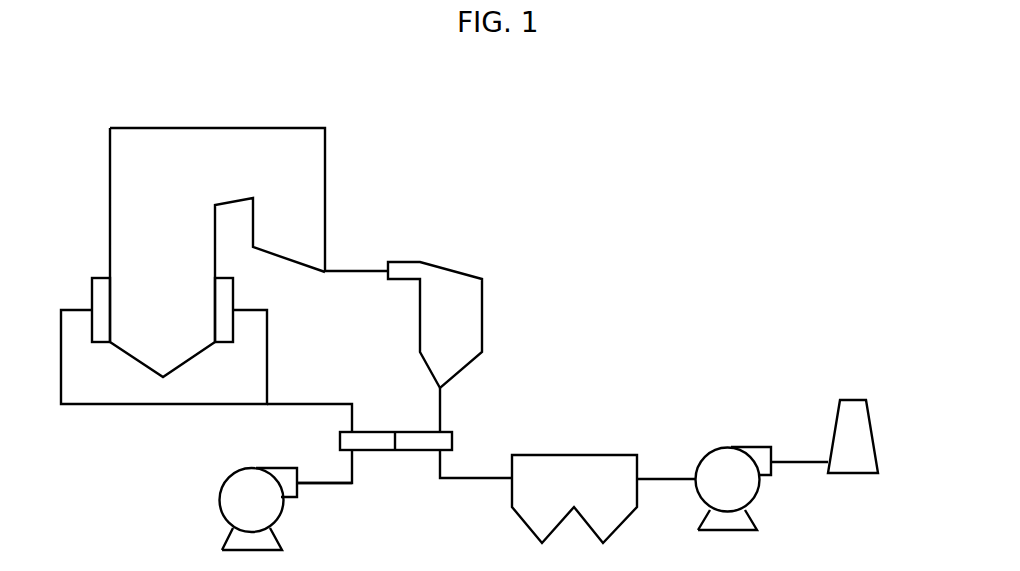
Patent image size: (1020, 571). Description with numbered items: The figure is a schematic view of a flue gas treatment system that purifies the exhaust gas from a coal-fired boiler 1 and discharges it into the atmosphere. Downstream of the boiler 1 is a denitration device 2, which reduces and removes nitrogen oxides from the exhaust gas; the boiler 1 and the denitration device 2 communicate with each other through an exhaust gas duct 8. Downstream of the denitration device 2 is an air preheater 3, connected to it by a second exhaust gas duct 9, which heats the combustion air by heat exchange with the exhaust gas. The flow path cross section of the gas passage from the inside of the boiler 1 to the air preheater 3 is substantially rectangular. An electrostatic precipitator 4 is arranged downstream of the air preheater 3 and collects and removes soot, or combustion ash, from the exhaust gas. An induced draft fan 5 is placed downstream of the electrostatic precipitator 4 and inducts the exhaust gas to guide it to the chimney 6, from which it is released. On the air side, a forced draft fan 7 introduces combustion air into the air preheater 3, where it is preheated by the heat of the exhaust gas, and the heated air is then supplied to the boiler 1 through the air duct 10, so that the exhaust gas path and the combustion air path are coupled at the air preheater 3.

The boiler 1 is at (108, 162).
The denitration device 2 is at (482, 300).
The air preheater 3 is at (452, 432).
The electrostatic precipitator 4 is at (612, 455).
The induced draft fan 5 is at (716, 448).
The chimney 6 is at (850, 398).
The forced draft fan 7 is at (240, 472).
The exhaust gas duct 8 is at (353, 271).
The exhaust gas duct 9 is at (436, 410).
The air duct 10 is at (305, 398).